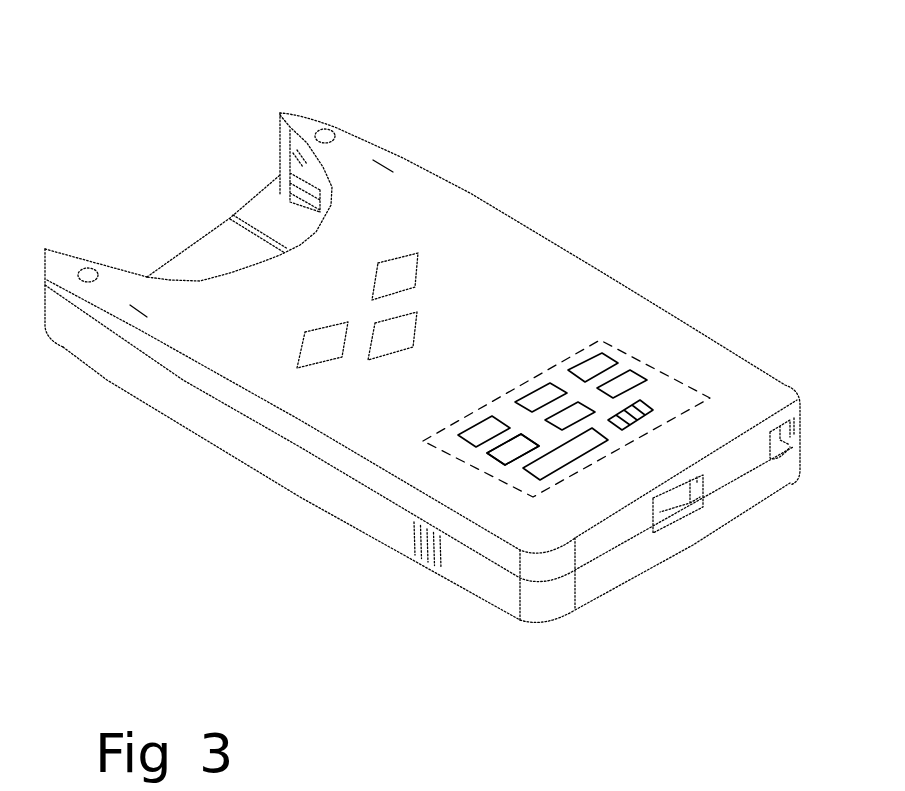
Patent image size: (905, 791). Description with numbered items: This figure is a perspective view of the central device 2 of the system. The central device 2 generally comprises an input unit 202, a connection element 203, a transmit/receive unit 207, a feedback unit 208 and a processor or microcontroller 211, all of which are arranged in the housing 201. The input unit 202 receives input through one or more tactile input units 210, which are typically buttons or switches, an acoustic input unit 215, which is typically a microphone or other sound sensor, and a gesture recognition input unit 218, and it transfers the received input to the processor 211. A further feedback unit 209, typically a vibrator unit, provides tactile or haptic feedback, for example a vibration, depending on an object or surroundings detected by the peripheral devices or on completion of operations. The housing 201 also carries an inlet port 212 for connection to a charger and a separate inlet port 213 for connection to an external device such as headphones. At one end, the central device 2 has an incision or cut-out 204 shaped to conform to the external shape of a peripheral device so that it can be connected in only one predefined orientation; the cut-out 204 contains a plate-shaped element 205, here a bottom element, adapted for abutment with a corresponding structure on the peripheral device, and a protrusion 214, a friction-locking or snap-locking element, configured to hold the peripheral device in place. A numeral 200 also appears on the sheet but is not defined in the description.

The central device 2 is at (703, 218).
The device assembly 200 is at (530, 783).
The housing 201 is at (698, 330).
The input unit 202 is at (597, 460).
The connection element 203 is at (267, 200).
The cut-out 204 is at (310, 240).
The plate-shaped element 205 is at (198, 262).
The transmit/receive unit 207 is at (418, 273).
The feedback unit 208 is at (413, 540).
The further feedback unit 209 is at (398, 350).
The tactile input units 210 is at (507, 462).
The processor 211 is at (313, 366).
The inlet port 212 is at (670, 512).
The inlet port 213 is at (782, 453).
The protrusion 214 is at (297, 171).
The acoustic input unit 215 is at (647, 407).
The gesture recognition input unit 218 is at (548, 465).